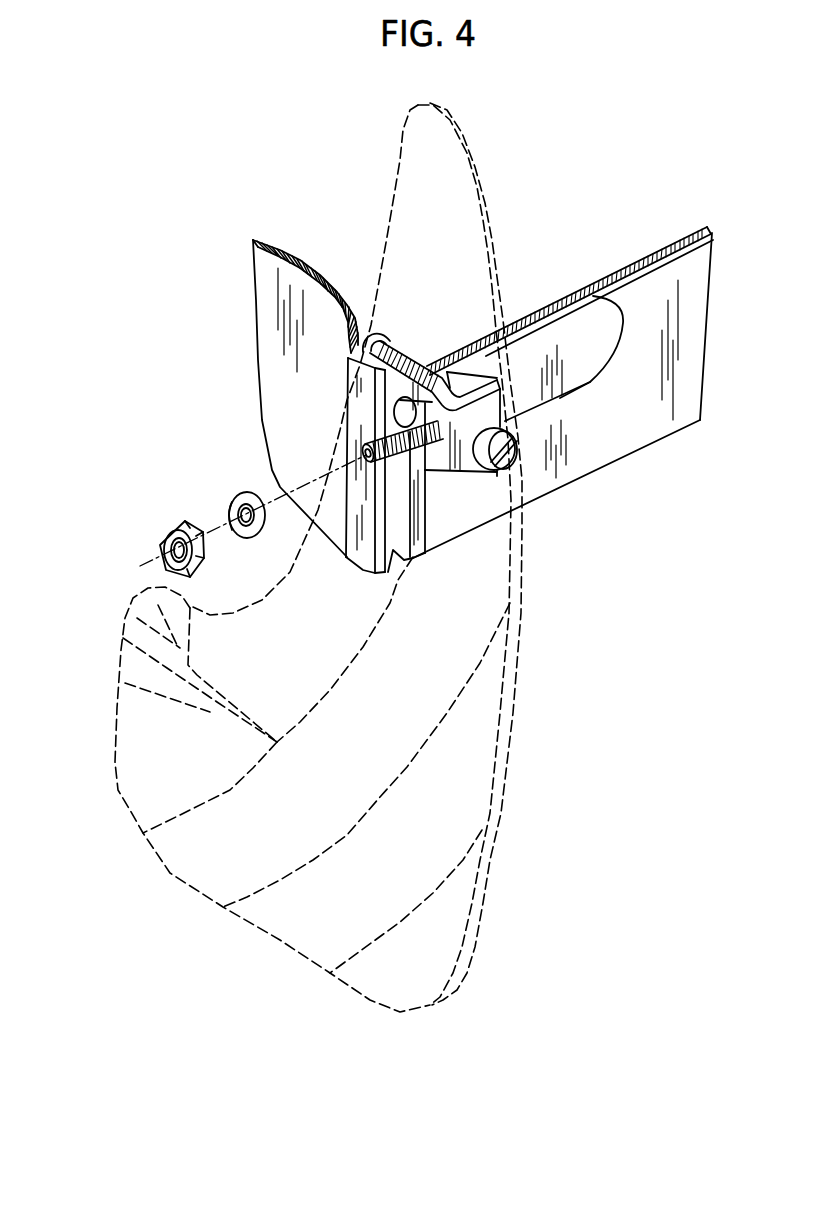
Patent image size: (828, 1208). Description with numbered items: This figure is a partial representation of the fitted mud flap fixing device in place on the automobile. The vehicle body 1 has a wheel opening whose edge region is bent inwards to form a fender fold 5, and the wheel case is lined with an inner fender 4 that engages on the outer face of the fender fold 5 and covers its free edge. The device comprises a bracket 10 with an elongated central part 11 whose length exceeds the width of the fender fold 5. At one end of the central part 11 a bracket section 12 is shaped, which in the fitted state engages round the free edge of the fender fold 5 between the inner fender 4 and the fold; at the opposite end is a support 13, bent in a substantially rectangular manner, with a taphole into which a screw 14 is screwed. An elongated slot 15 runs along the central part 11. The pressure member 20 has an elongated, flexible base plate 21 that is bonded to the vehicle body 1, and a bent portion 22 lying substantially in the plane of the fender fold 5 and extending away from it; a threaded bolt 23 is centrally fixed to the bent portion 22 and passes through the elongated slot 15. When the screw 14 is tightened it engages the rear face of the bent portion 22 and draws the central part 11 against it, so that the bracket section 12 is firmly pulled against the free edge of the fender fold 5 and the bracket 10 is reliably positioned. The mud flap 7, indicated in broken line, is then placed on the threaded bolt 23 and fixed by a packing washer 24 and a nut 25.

The vehicle body 1 is at (672, 420).
The inner fender 4 is at (288, 282).
The fender fold 5 is at (405, 352).
The mud flap 7 is at (487, 760).
The bracket 10 is at (472, 494).
The central part 11 is at (443, 470).
The bracket section 12 is at (372, 338).
The support 13 is at (480, 486).
The screw 14 is at (517, 462).
The elongated slot 15 is at (393, 417).
The pressure member 20 is at (584, 396).
The base plate 21 is at (592, 362).
The bent portion 22 is at (453, 352).
The threaded bolt 23 is at (396, 463).
The packing washer 24 is at (232, 505).
The nut 25 is at (165, 535).